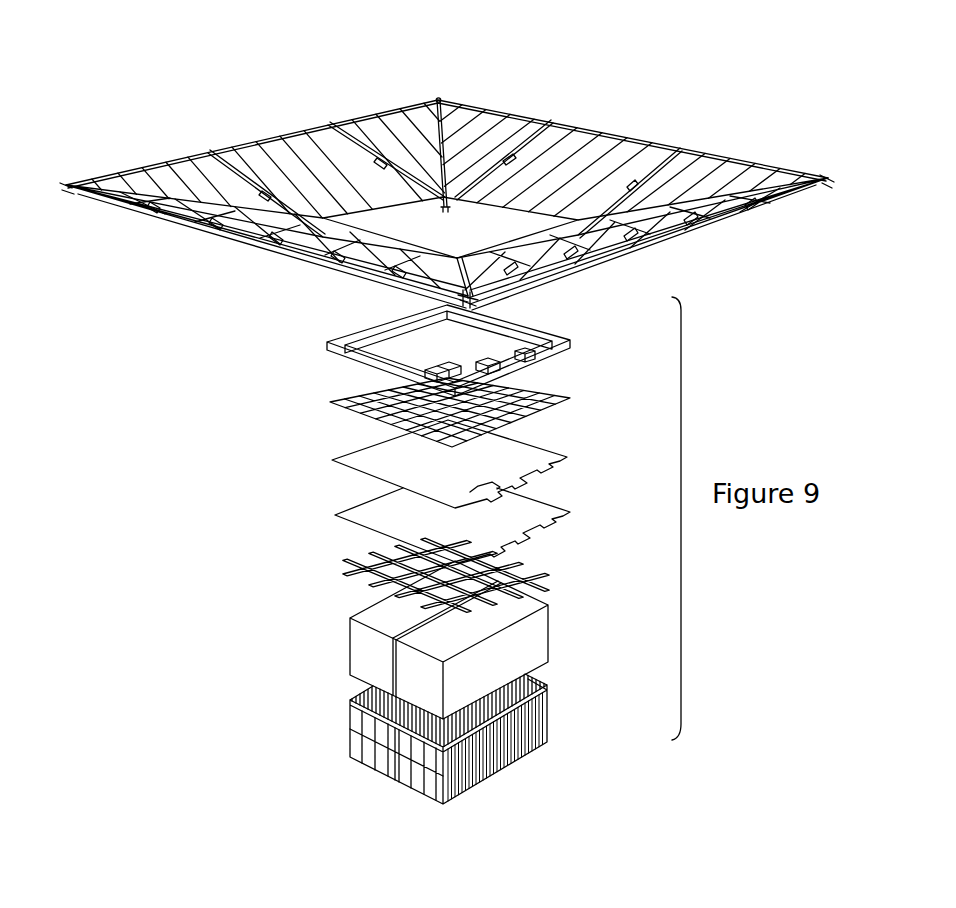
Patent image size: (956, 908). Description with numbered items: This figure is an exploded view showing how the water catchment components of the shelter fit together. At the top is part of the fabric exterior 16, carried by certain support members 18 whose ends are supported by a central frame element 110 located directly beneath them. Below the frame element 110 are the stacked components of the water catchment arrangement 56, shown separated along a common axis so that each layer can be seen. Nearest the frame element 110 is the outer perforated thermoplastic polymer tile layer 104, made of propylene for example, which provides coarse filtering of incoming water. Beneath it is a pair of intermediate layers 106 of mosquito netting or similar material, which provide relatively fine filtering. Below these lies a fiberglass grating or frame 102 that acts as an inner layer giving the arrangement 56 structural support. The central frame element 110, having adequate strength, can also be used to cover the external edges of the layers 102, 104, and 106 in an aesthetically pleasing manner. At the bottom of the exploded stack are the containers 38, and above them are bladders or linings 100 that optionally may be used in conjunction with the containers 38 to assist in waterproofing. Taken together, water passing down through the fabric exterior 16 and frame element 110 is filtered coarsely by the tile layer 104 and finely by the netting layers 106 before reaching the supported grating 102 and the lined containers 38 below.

The fabric exterior 16 is at (448, 160).
The support members 18 is at (482, 108).
The containers 38 is at (410, 785).
The water catchment arrangement 56 is at (301, 332).
The bladders or linings 100 is at (549, 634).
The fiberglass grating or frame 102 is at (549, 573).
The perforated thermoplastic polymer tile layer 104 is at (555, 391).
The intermediate layers 106 is at (553, 508).
The central frame element 110 is at (530, 333).